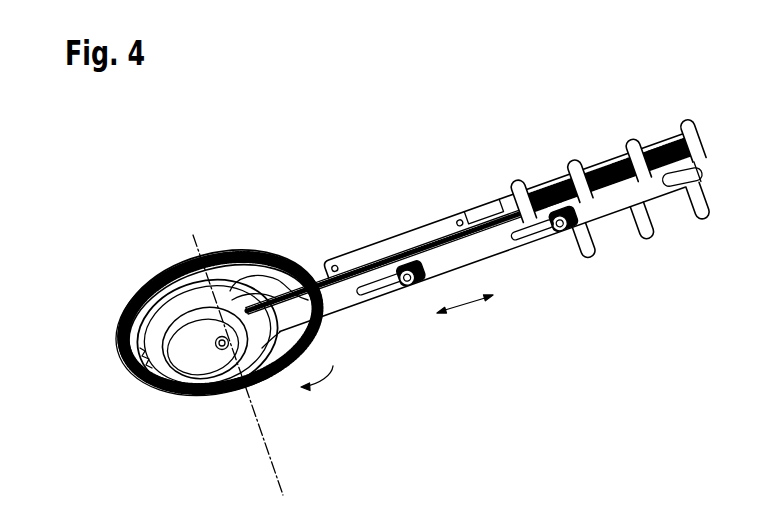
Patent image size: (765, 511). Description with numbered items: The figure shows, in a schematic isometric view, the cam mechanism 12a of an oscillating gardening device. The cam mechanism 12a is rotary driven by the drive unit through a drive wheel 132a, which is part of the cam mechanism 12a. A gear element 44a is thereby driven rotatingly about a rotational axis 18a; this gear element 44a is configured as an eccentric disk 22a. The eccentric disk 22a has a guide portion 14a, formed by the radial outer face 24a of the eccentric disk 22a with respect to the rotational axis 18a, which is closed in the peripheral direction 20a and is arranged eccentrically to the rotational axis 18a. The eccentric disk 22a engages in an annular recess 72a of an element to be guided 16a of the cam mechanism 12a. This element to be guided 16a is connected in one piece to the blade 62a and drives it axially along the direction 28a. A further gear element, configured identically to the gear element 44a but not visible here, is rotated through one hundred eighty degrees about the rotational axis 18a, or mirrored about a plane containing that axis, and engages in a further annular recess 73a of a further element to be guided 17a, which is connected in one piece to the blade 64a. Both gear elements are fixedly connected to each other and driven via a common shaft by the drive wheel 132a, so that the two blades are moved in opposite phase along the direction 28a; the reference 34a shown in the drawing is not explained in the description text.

The cam mechanism 12a is at (478, 230).
The guide portion 14a is at (197, 294).
The radial outer face 24a is at (230, 338).
The further element to be guided 17a is at (259, 262).
The eccentric disk 22a is at (181, 308).
The gear element 44a is at (138, 284).
The drive wheel 132a is at (120, 313).
The element to be guided 16a is at (183, 305).
The rotational axis 18a is at (285, 486).
The peripheral direction 20a is at (333, 366).
The annular recess 72a is at (260, 389).
The further annular recess 73a is at (290, 297).
The blade 62a is at (500, 248).
The blade 64a is at (516, 226).
The direction 28a is at (462, 306).
The comb blade 34a is at (667, 238).